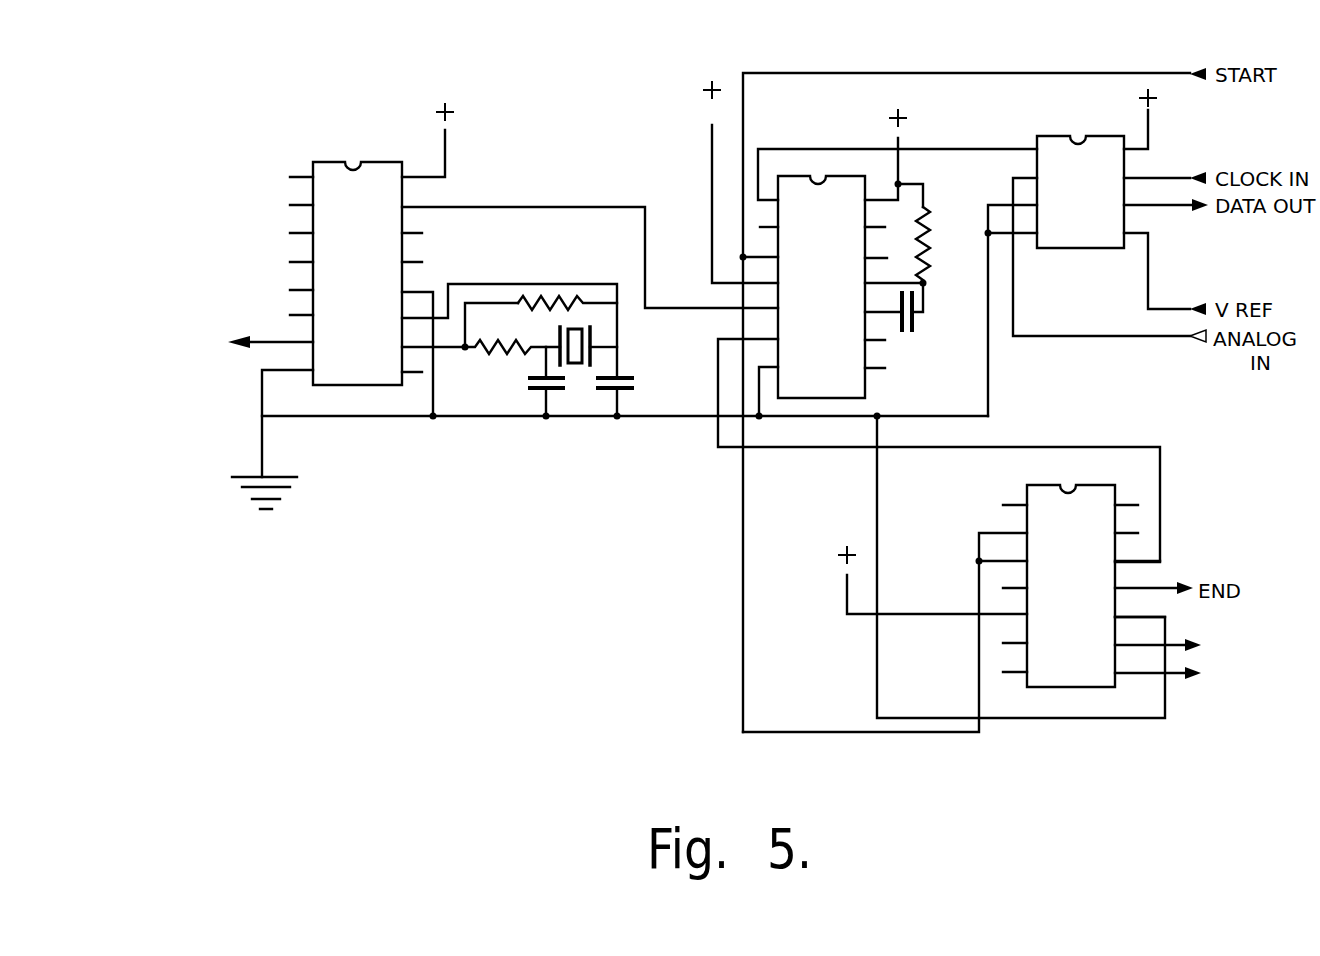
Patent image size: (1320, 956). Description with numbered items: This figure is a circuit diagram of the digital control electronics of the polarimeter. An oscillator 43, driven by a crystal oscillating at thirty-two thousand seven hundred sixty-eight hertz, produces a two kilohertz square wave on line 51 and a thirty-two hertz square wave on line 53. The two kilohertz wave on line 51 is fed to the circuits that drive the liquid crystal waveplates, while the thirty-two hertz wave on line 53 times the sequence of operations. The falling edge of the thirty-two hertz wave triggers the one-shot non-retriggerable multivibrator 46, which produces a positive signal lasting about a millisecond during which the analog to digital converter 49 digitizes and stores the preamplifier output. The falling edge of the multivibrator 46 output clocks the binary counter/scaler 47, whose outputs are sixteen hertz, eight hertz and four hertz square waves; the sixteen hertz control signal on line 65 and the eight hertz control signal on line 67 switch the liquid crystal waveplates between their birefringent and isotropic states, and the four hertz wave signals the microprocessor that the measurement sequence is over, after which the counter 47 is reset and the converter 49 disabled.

The oscillator 43 is at (360, 363).
The one shot non-retriggerable multivibrator 46 is at (853, 188).
The binary counter/scaler 47 is at (1100, 533).
The analog to digital converter 49 is at (1105, 160).
The line carrying 2 kHz signal from oscillator 51 is at (262, 340).
The line carrying 32 Hz signal from oscillator 53 is at (628, 205).
The line carrying 16 Hz control signal for the λ/2 waveplate 65 is at (1137, 645).
The line carrying 8 Hz control signal for the λ/3 waveplate 67 is at (1135, 673).